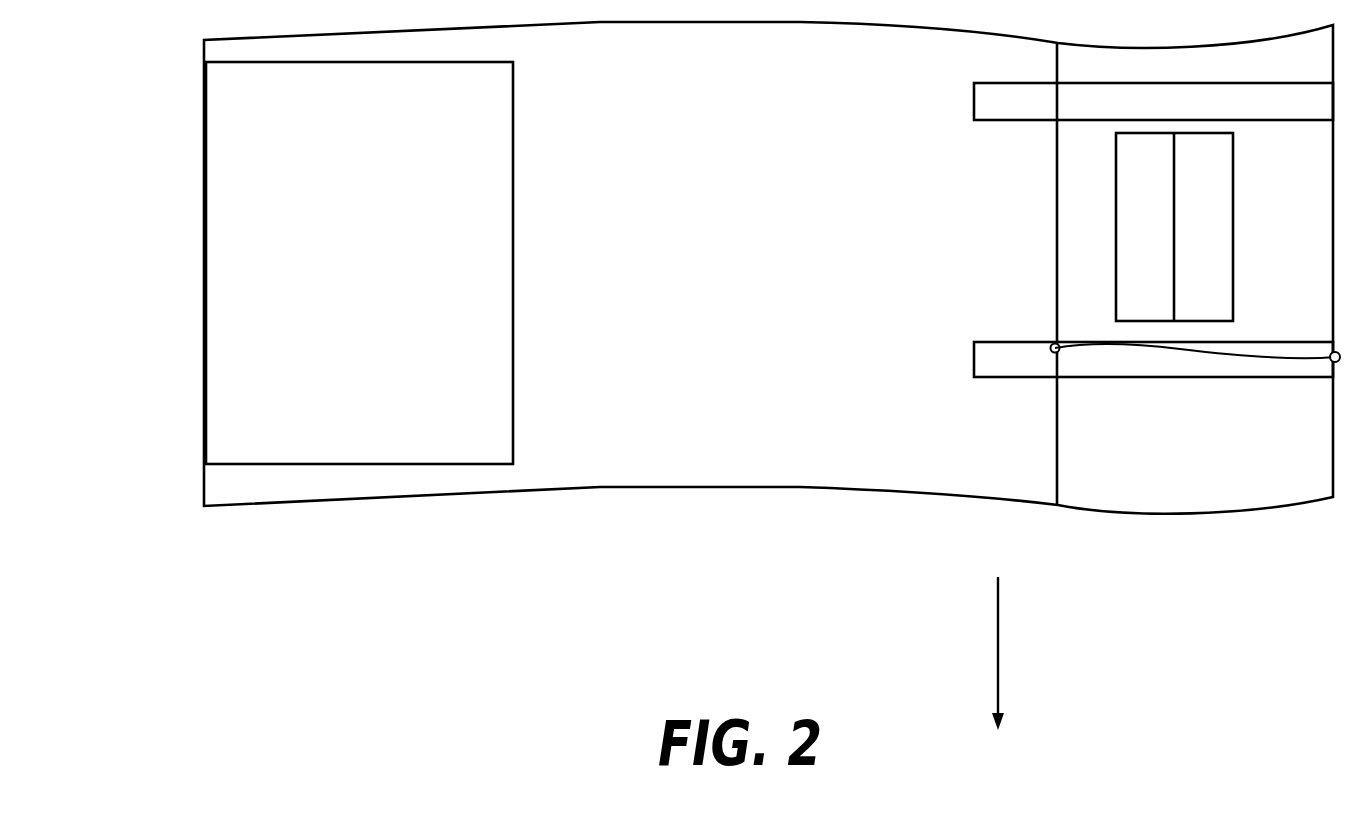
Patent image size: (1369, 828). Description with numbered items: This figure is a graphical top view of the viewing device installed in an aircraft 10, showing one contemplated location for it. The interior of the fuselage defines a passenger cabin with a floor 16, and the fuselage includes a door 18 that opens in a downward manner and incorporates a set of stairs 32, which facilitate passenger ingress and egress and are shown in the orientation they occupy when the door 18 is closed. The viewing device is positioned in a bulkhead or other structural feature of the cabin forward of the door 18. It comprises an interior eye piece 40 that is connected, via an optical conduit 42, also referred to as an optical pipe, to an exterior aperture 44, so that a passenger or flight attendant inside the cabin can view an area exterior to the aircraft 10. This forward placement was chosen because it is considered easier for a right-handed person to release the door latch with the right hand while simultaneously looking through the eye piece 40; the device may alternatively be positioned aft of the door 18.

The aircraft 10 is at (772, 376).
The floor 16 is at (719, 258).
The door 18 is at (1289, 243).
The stairs 32 is at (1105, 192).
The interior eye piece 40 is at (1036, 336).
The optical conduit 42 is at (1243, 368).
The exterior aperture 44 is at (1331, 364).